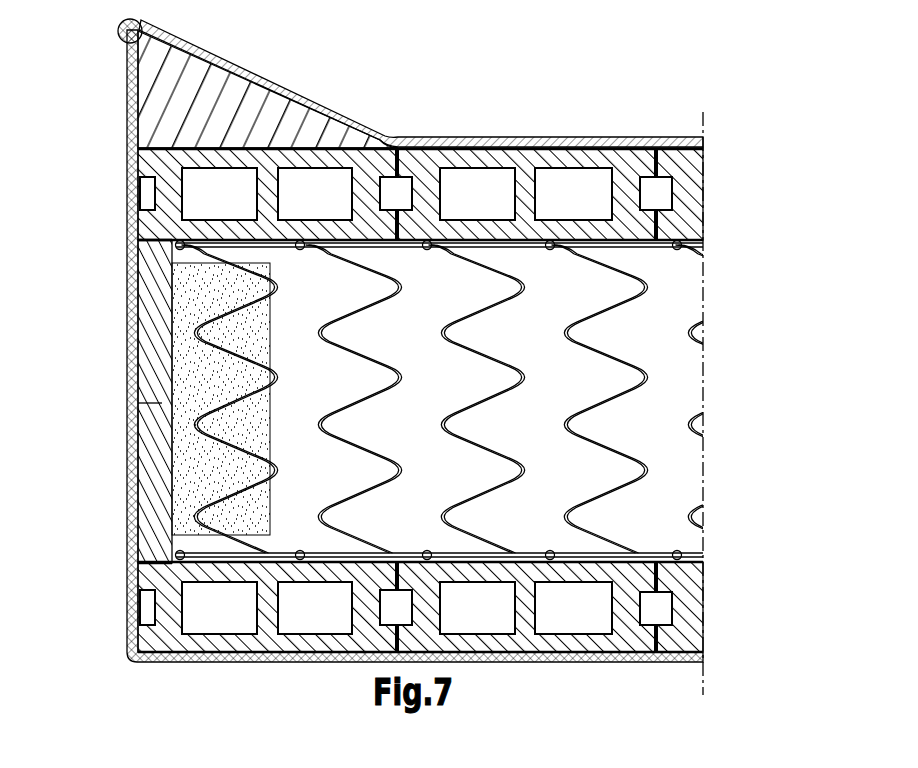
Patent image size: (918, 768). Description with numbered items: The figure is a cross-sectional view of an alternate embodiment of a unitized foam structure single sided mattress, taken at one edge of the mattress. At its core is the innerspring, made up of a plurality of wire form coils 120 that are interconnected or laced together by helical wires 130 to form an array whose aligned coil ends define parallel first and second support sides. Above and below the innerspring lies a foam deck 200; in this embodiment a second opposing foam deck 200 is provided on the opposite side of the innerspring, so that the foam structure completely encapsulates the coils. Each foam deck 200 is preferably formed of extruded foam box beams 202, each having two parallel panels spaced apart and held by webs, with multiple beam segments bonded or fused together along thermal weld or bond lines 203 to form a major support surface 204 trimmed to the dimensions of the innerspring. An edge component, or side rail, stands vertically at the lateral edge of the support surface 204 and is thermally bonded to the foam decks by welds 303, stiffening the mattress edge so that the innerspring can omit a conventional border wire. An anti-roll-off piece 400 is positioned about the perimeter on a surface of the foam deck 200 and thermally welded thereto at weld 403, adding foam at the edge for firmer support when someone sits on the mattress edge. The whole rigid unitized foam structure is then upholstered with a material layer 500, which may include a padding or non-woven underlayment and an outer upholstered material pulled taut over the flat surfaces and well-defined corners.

The wire form coils 120 is at (660, 288).
The helical wires 130 is at (680, 234).
The foam deck 200 is at (592, 135).
The foam box beams 202 is at (453, 146).
The thermal weld or bond lines 203 is at (676, 640).
The major support surface 204 is at (594, 555).
The welds 303 is at (138, 268).
The anti-roll-off piece 400 is at (217, 117).
The weld 403 is at (140, 160).
The upholstery material layer 500 is at (704, 140).